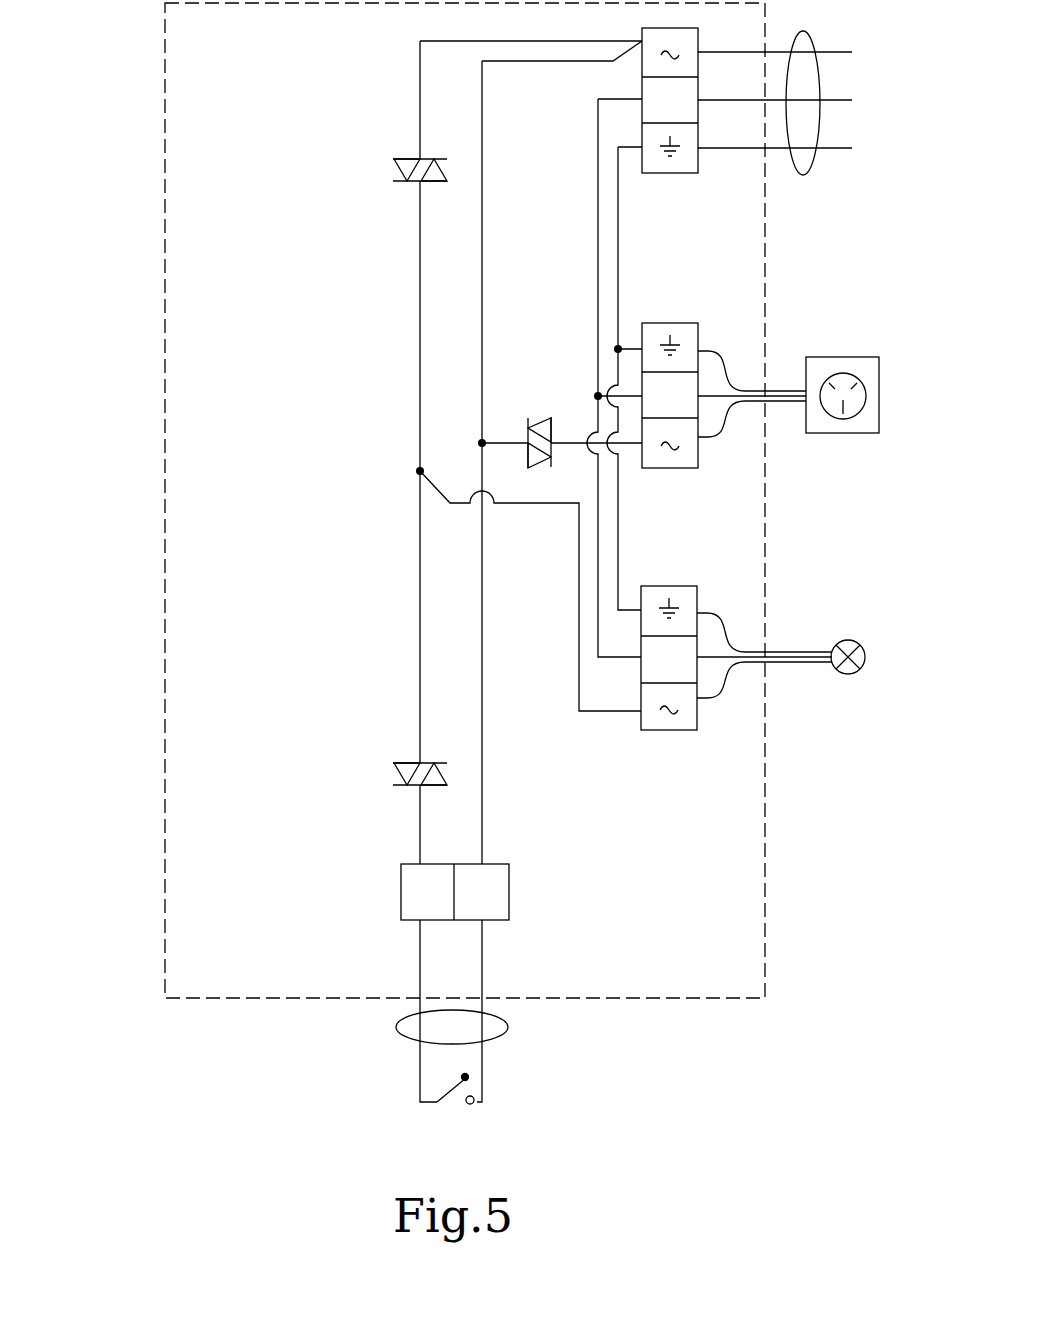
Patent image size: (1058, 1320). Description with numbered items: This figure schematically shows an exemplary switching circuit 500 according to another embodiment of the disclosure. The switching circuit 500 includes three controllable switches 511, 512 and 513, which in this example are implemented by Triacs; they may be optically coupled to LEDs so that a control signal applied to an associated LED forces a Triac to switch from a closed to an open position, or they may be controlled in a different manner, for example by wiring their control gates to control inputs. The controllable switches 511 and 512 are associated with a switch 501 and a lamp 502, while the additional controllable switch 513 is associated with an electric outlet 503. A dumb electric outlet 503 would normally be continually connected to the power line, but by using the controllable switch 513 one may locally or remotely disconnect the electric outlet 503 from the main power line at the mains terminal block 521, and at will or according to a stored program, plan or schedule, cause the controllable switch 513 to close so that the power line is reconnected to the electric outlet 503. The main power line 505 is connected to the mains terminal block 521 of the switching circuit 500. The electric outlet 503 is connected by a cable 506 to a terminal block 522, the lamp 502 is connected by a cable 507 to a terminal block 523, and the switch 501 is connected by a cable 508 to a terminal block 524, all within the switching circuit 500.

The switching circuit 500 is at (165, 750).
The switch 501 is at (453, 1104).
The lamp 502 is at (845, 640).
The electric outlet 503 is at (858, 367).
The main power line 505 is at (803, 175).
The cable 506 is at (780, 397).
The cable 507 is at (793, 664).
The cable 508 is at (508, 1027).
The controllable switch 511 is at (397, 787).
The controllable switch 512 is at (411, 183).
The controllable switch 513 is at (543, 417).
The mains terminal block 521 is at (653, 173).
The terminal block 522 is at (658, 468).
The terminal block 523 is at (668, 731).
The terminal block 524 is at (509, 890).